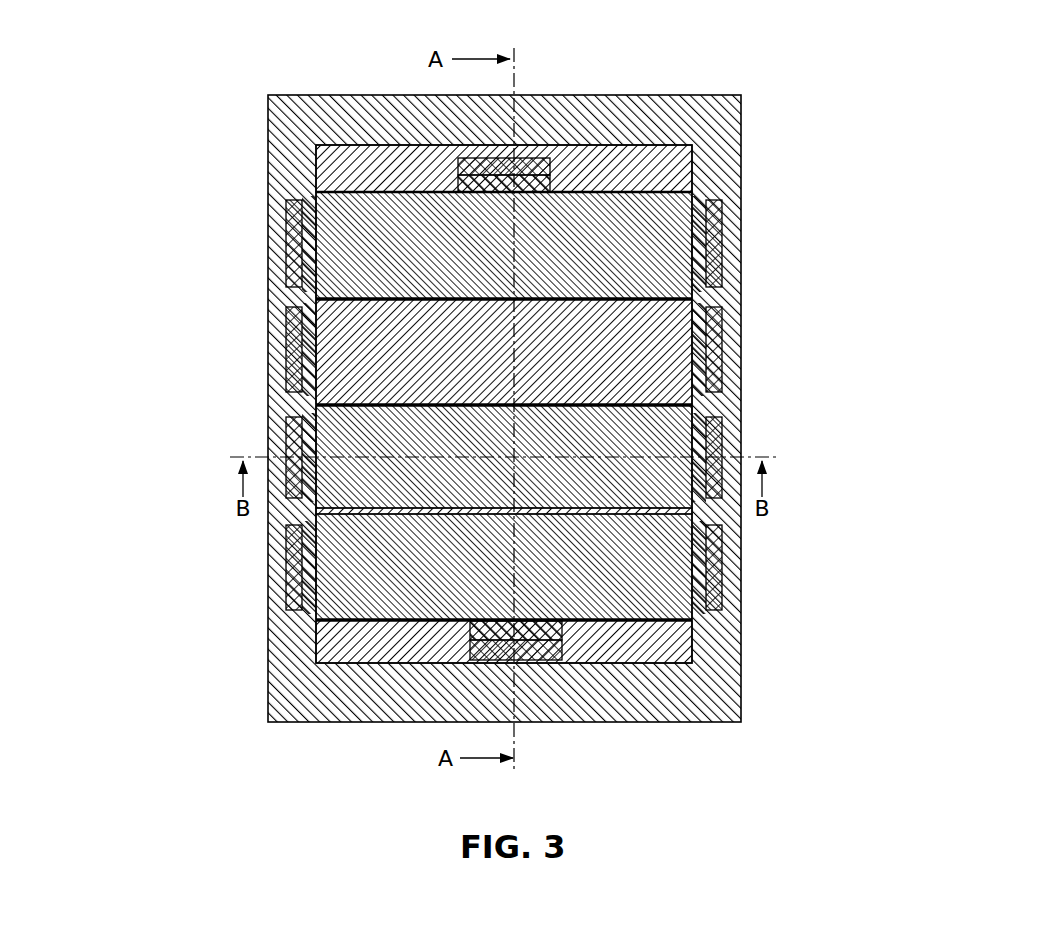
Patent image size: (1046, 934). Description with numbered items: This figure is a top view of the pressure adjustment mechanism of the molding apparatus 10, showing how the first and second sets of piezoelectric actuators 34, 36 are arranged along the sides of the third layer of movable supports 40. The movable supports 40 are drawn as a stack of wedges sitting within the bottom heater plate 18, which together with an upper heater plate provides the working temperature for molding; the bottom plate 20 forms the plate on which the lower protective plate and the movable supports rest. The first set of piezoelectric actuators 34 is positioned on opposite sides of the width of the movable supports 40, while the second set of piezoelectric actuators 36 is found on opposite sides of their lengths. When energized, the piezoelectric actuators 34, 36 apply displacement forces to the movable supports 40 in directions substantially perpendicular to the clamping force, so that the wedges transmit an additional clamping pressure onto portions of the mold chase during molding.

The molding apparatus 10 is at (801, 58).
The bottom heater plate 18 is at (744, 251).
The bottom plate 20 is at (695, 172).
The first set of piezoelectric actuators 34 is at (538, 177).
The second set of piezoelectric actuators 36 is at (304, 238).
The third layer of movable supports 40 is at (634, 573).